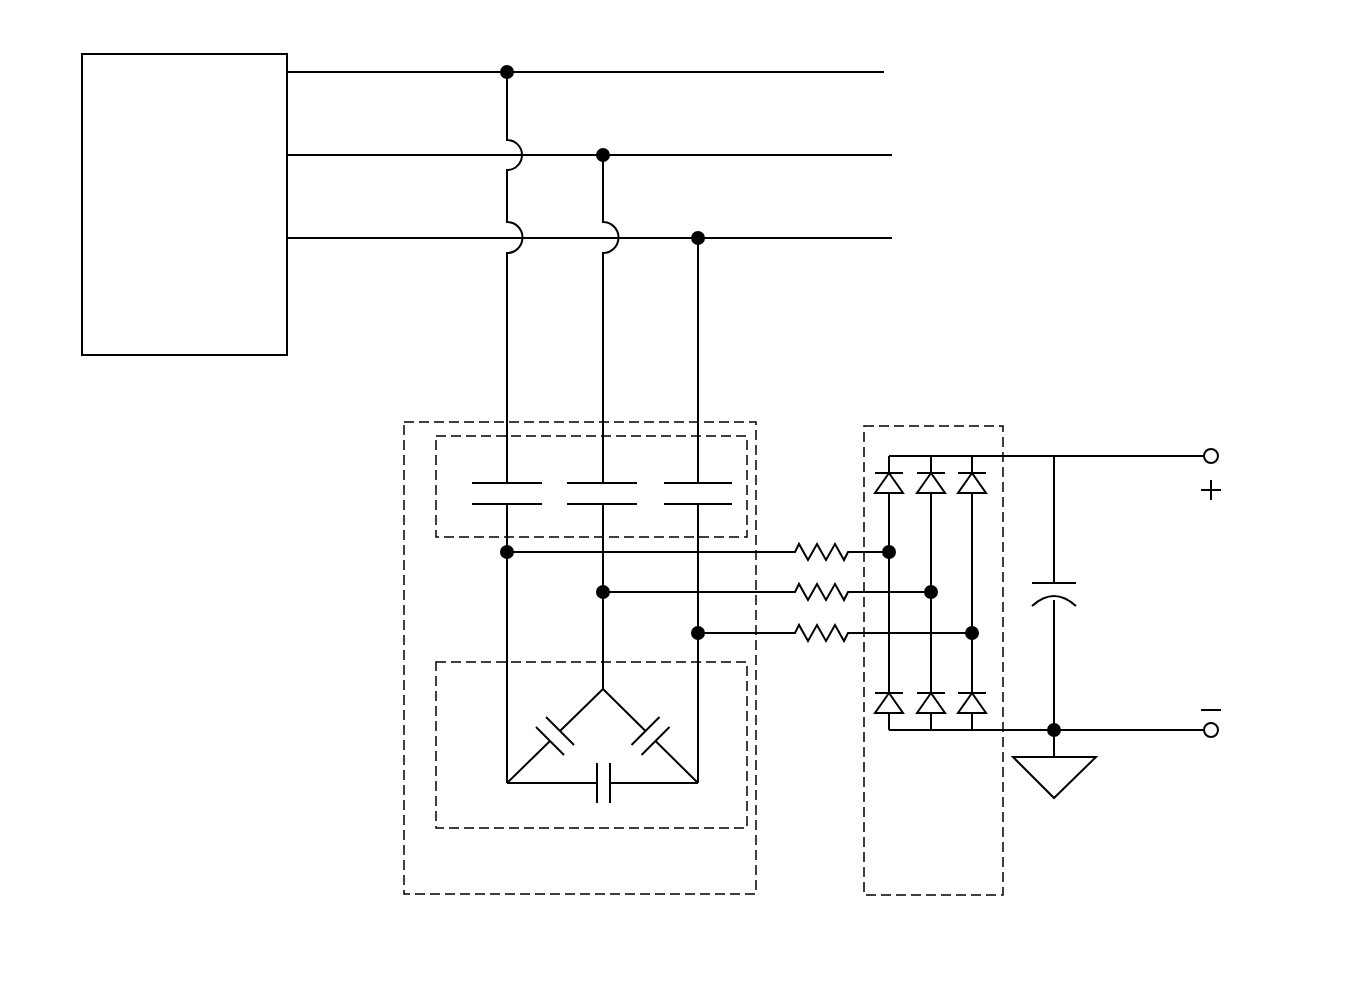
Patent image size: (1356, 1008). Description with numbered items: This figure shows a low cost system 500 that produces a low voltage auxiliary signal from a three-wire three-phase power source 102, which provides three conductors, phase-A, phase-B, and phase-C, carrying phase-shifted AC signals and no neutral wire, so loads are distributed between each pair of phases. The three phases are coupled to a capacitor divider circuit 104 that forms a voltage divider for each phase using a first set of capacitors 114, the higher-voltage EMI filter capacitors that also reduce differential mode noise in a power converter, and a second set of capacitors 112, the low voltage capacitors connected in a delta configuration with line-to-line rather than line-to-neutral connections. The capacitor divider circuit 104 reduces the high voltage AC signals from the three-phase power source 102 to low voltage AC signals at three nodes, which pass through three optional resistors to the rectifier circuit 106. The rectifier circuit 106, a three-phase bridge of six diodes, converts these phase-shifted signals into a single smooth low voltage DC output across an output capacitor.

The system 500 is at (1269, 96).
The three-phase power source 102 is at (185, 355).
The capacitor divider circuit 104 is at (404, 830).
The rectifier circuit 106 is at (864, 838).
The second set of capacitors 112 is at (436, 672).
The first set of capacitors 114 is at (436, 500).